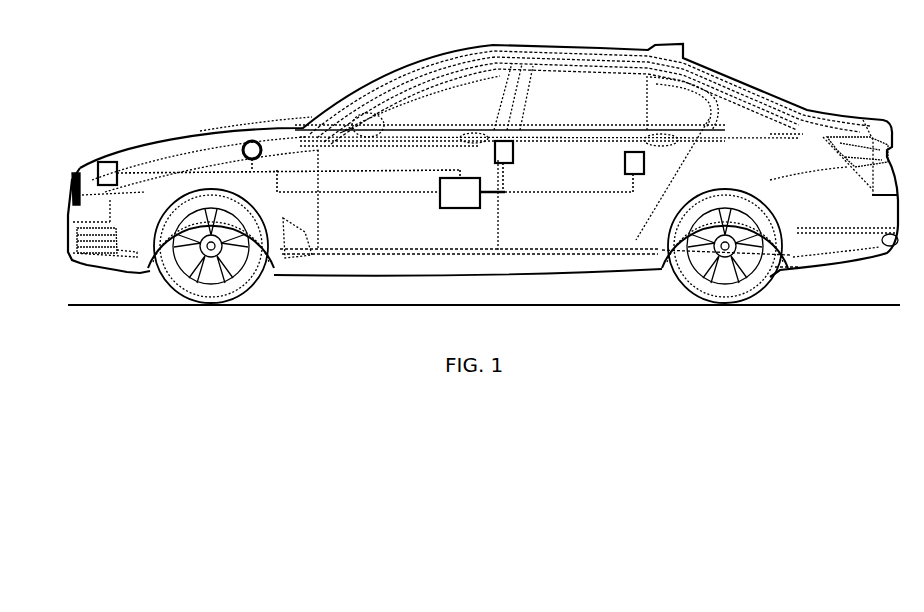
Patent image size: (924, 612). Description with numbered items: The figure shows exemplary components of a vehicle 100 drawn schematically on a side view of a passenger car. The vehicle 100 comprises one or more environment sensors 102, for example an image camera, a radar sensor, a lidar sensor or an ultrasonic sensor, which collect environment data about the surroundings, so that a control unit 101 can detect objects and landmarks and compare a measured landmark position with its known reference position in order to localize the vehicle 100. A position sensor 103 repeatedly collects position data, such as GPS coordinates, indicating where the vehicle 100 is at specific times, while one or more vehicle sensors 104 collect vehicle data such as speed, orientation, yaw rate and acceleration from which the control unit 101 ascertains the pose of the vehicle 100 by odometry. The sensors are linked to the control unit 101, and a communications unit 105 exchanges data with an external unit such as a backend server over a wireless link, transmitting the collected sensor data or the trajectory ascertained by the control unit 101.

The vehicle 100 is at (196, 66).
The control unit 101 is at (440, 192).
The environment sensor 102 is at (100, 162).
The position sensor 103 is at (513, 155).
The vehicle sensor 104 is at (645, 155).
The communications unit 105 is at (251, 141).